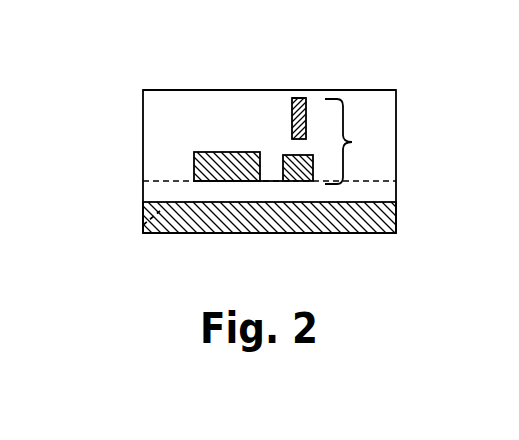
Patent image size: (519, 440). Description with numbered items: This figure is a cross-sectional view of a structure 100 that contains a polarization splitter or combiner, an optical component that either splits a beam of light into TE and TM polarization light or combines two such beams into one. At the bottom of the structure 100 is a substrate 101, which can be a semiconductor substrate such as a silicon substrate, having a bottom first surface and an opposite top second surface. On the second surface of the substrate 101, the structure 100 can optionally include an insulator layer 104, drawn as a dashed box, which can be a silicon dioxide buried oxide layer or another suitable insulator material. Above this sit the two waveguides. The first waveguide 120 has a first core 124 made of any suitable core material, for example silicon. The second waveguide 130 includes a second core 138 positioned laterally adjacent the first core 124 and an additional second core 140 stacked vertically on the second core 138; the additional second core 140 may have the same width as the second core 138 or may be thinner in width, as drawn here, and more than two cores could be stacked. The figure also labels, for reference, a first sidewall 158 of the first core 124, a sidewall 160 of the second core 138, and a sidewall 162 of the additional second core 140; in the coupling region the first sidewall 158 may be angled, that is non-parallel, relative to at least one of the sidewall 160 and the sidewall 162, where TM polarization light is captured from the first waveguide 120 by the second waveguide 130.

The structure 100 is at (158, 64).
The substrate 101 is at (172, 227).
The insulator layer 104 is at (143, 225).
The first waveguide 120 is at (216, 136).
The first core 124 is at (230, 170).
The second waveguide 130 is at (352, 142).
The second core 138 is at (295, 181).
The additional second core 140 is at (307, 100).
The first sidewall 158 is at (263, 169).
The sidewall 160 is at (283, 173).
The sidewall 162 is at (289, 122).